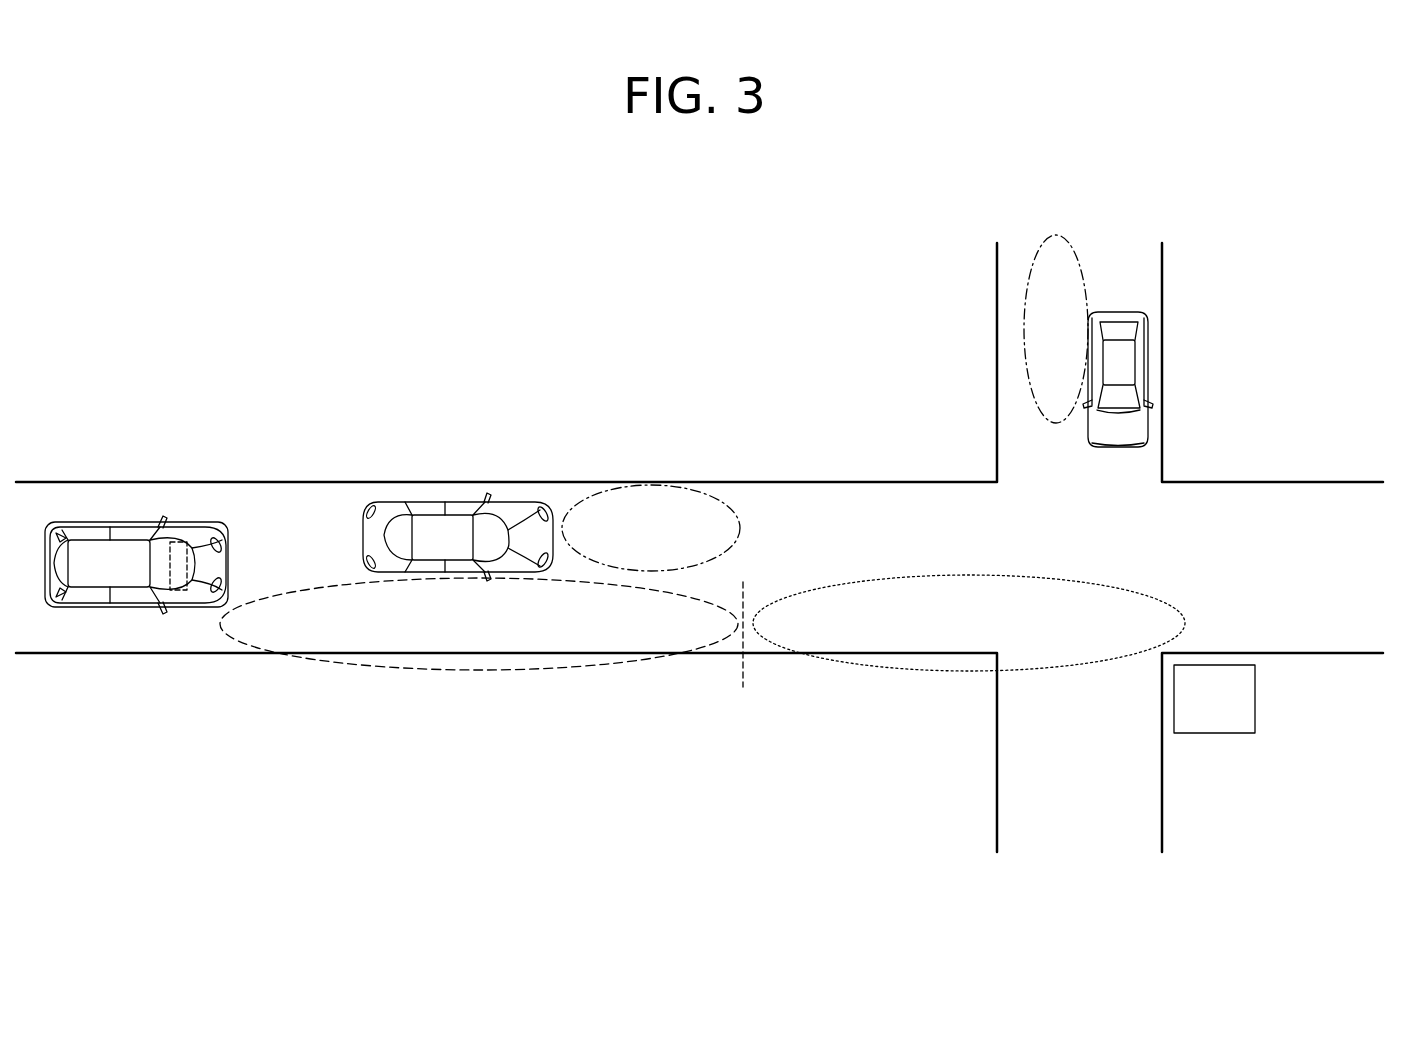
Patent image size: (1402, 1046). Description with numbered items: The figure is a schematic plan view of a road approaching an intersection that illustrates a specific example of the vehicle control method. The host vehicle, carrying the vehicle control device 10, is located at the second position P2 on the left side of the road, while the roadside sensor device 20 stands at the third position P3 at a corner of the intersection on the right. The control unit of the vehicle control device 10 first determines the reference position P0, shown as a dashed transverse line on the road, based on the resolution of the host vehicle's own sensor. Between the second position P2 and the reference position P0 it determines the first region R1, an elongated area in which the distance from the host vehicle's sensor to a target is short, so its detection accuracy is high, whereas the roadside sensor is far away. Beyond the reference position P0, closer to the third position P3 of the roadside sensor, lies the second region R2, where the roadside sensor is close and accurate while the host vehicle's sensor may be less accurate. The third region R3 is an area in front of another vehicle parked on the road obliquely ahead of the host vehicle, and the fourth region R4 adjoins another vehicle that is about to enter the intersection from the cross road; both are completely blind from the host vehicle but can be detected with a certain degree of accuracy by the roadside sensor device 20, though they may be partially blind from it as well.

The vehicle control device 10 is at (180, 522).
The roadside sensor device 20 is at (1211, 733).
The reference position P0 is at (744, 652).
The second position P2 is at (137, 493).
The third position P3 is at (1280, 745).
The first region R1 is at (415, 669).
The second region R2 is at (1087, 664).
The third region R3 is at (735, 512).
The fourth region R4 is at (1040, 243).